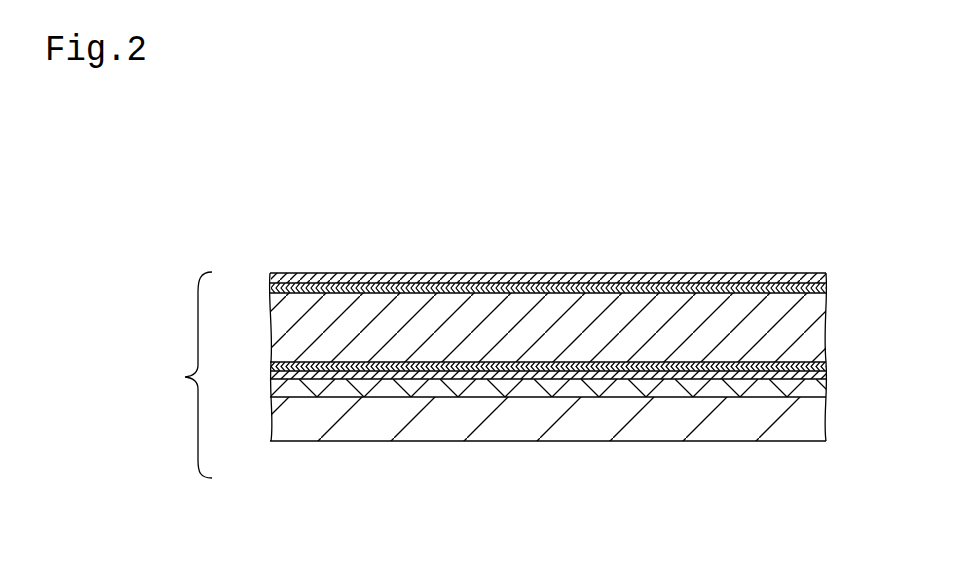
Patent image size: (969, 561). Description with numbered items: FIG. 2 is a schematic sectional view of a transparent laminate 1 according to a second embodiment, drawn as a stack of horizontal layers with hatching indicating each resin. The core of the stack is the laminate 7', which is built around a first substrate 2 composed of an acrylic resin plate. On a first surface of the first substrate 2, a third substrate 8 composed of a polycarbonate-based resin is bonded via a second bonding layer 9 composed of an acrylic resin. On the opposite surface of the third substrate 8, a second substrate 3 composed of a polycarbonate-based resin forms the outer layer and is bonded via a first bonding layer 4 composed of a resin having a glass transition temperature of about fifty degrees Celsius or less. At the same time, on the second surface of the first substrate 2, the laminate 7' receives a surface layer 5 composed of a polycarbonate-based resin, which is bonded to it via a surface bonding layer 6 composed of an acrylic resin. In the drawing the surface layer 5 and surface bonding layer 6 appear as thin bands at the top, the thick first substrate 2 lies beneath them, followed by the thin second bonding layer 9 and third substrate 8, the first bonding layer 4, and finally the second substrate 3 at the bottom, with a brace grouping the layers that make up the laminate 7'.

The transparent laminate 1 is at (394, 254).
The first substrate 2 is at (297, 332).
The second substrate 3 is at (283, 423).
The first bonding layer 4 is at (274, 390).
The surface layer 5 is at (821, 274).
The surface bonding layer 6 is at (823, 292).
The laminate 7' is at (486, 375).
The third substrate 8 is at (274, 372).
The second bonding layer 9 is at (272, 361).